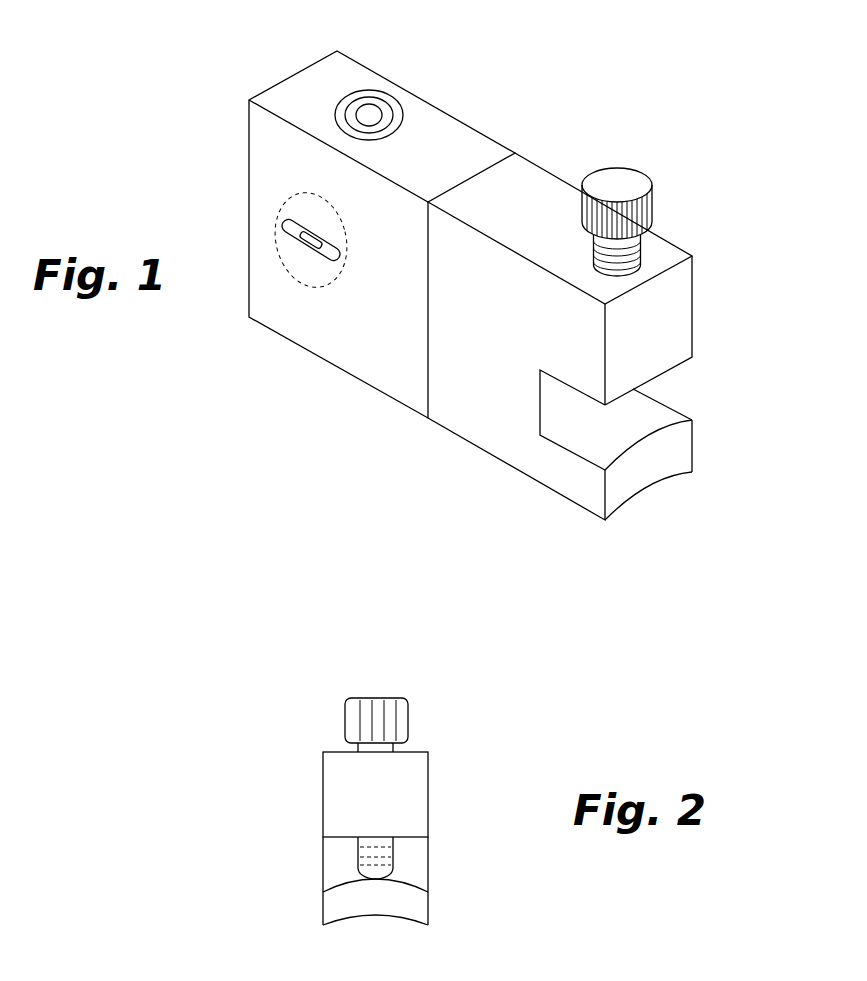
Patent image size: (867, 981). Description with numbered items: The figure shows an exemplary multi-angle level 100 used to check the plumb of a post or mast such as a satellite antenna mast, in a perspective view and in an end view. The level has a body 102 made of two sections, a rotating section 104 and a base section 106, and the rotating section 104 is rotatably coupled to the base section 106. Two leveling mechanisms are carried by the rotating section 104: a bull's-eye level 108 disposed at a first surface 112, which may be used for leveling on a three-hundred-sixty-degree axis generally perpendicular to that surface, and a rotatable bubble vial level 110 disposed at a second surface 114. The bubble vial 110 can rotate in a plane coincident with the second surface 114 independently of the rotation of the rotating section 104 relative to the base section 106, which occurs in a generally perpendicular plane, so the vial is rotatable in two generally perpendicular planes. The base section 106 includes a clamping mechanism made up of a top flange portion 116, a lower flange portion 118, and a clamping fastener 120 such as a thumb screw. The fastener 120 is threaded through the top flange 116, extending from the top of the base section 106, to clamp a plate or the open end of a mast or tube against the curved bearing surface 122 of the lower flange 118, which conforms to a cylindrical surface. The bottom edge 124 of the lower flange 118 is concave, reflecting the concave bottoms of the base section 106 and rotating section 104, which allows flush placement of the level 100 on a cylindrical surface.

In FIG. 1, the multi-angle level 100 is at (712, 53).
In FIG. 2, the multi-angle level 100 is at (247, 745).
In FIG. 1, the body 102 is at (598, 530).
In FIG. 1, the rotating section 104 is at (249, 317).
In FIG. 1, the base section 106 is at (428, 418).
In FIG. 1, the bull's-eye level 108 is at (373, 112).
In FIG. 1, the bubble vial level 110 is at (307, 213).
In FIG. 1, the first surface 112 is at (315, 88).
In FIG. 1, the second surface 114 is at (277, 168).
In FIG. 1, the top flange portion 116 is at (657, 317).
In FIG. 2, the top flange portion 116 is at (415, 783).
In FIG. 1, the lower flange portion 118 is at (665, 457).
In FIG. 2, the lower flange portion 118 is at (413, 908).
In FIG. 1, the clamping fastener 120 is at (625, 185).
In FIG. 2, the clamping fastener 120 is at (357, 697).
In FIG. 1, the curved bearing surface 122 is at (597, 432).
In FIG. 2, the curved bearing surface 122 is at (395, 880).
In FIG. 1, the bottom edge 124 is at (647, 490).
In FIG. 2, the bottom edge 124 is at (377, 918).